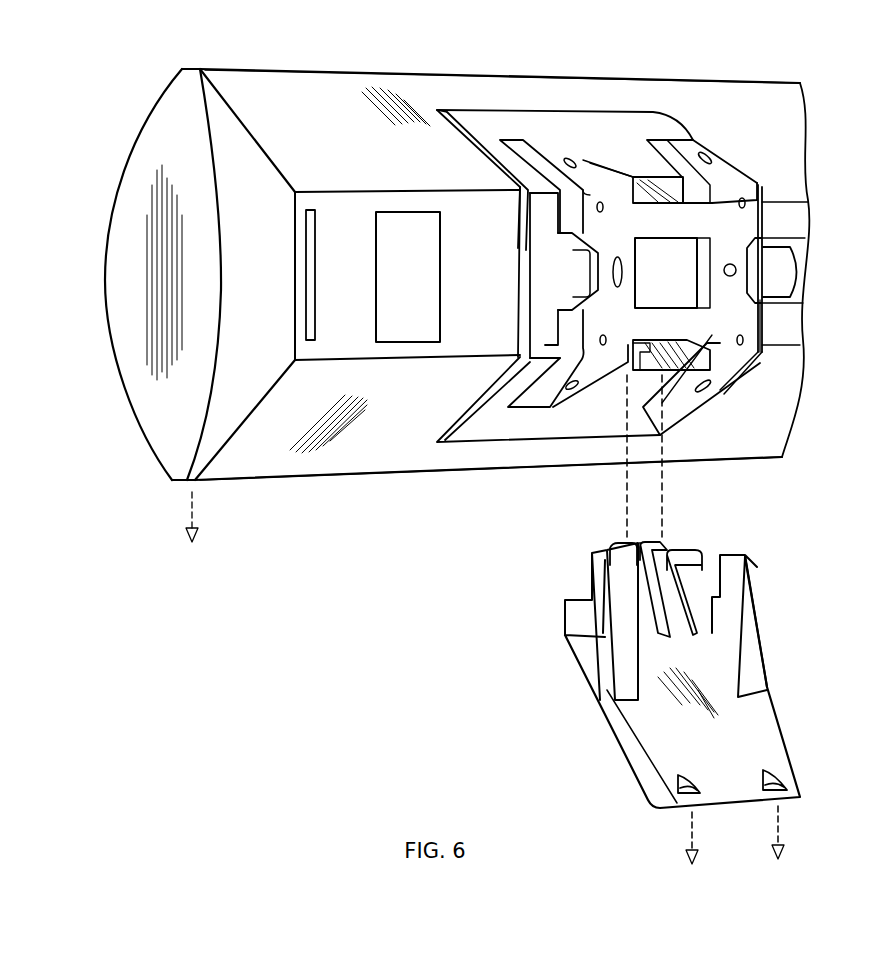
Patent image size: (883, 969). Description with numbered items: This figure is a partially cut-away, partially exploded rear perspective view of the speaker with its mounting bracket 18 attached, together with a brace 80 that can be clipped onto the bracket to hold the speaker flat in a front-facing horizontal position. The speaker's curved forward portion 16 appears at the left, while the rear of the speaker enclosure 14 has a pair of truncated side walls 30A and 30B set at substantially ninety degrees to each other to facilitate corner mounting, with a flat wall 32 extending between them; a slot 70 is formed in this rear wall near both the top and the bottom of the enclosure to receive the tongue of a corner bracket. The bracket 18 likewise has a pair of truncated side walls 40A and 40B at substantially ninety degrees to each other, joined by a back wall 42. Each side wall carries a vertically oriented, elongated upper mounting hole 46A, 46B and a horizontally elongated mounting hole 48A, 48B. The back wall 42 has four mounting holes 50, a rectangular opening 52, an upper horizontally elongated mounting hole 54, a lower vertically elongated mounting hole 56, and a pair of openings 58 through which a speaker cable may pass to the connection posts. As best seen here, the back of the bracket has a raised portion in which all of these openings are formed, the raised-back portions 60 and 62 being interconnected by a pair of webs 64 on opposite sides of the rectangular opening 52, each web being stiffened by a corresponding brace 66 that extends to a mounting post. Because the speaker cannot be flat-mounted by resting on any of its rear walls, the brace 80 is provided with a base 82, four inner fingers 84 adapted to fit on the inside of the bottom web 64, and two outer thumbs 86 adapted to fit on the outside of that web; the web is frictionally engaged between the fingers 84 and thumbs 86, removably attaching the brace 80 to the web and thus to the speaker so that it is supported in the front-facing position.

The speaker enclosure 14 is at (312, 88).
The lens 16 is at (160, 105).
The mounting bracket 18 is at (604, 104).
The truncated side wall 30A is at (707, 92).
The truncated side wall 30B is at (368, 465).
The flat wall 32 is at (474, 338).
The truncated side wall 40A is at (551, 120).
The truncated side wall 40B is at (493, 433).
The back wall 42 is at (533, 278).
The upper mounting hole 46A is at (715, 158).
The upper mounting hole 46B is at (713, 386).
The mounting hole 48A is at (575, 160).
The mounting hole 48B is at (574, 390).
The mounting hole 50 is at (758, 200).
The rectangular opening 52 is at (651, 286).
The upper mounting hole 54 is at (731, 262).
The lower mounting hole 56 is at (616, 256).
The opening 58 is at (583, 266).
The raised back portion 60 is at (604, 323).
The raised back portion 62 is at (715, 325).
The web 64 is at (655, 229).
The brace 66 is at (640, 182).
The slot 70 is at (318, 276).
The brace 80 is at (697, 657).
The base 82 is at (765, 718).
The inner finger 84 is at (615, 545).
The outer thumb 86 is at (617, 640).